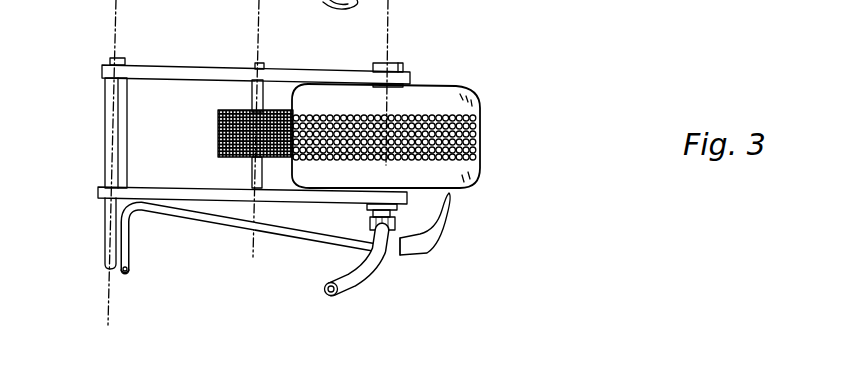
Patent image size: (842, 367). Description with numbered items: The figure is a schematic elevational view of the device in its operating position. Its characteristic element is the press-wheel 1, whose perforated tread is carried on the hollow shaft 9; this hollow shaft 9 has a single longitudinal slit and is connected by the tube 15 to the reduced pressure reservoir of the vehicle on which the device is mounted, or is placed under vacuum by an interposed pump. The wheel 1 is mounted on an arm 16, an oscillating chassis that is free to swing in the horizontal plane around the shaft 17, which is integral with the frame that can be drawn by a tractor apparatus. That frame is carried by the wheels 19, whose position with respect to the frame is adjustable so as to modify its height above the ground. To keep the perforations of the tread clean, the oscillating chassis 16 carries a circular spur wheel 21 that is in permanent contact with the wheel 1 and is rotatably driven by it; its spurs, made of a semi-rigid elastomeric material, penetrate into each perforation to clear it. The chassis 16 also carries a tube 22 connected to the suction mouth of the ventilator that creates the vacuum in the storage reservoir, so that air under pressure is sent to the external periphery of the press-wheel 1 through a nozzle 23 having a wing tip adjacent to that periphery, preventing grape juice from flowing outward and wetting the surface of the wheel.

The press-wheel 1 is at (483, 132).
The hollow shaft 9 is at (401, 64).
The tube 15 is at (384, 260).
The arm 16 is at (185, 73).
The shaft 17 is at (113, 152).
The wheels 19 is at (400, 5).
The circular spur wheel 21 is at (238, 112).
The tube 22 is at (283, 231).
The nozzle 23 is at (447, 224).